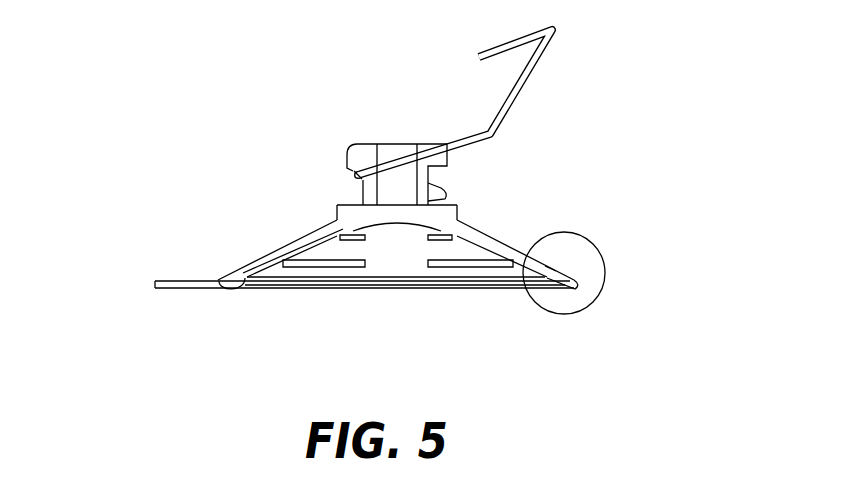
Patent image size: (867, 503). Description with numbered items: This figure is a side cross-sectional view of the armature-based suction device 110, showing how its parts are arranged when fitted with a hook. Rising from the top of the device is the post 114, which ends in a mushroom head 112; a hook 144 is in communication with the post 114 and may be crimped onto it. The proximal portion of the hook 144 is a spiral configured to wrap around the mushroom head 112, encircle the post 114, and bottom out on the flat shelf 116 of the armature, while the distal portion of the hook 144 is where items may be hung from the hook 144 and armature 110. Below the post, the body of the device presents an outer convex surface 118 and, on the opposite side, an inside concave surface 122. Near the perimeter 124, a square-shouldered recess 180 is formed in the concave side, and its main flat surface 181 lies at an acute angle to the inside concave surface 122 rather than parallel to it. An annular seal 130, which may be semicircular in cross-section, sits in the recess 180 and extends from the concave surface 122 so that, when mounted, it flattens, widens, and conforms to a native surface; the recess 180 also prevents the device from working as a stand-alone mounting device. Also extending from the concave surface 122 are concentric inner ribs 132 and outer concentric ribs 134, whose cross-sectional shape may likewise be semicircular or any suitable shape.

The armature-based suction device 110 is at (205, 201).
The mushroom head 112 is at (346, 141).
The post 114 is at (351, 190).
The flat shelf 116 is at (454, 203).
The convex surface 118 is at (299, 222).
The concave surface 122 is at (481, 255).
The perimeter 124 is at (586, 285).
The annular seal 130 is at (236, 295).
The concentric inner ribs 132 is at (340, 245).
The outer concentric ribs 134 is at (282, 266).
The hook 144 is at (580, 79).
The recess 180 is at (570, 275).
The main flat surface 181 is at (550, 265).